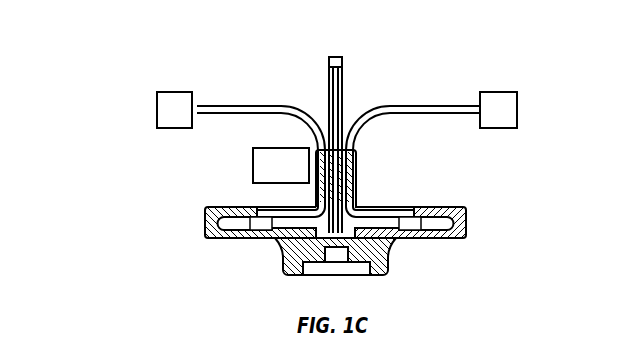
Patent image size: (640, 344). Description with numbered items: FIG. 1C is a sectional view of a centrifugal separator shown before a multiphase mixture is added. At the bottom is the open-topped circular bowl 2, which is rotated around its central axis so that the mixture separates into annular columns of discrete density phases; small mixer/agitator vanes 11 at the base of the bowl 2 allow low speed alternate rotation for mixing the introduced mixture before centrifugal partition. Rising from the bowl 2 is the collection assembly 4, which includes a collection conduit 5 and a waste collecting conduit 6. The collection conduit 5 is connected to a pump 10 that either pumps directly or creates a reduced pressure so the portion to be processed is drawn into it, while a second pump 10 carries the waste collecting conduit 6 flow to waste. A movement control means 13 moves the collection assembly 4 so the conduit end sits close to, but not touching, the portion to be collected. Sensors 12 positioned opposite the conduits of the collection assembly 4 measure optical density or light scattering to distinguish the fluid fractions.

The circular bowl 2 is at (213, 207).
The collection assembly 4 is at (360, 180).
The collection conduit 5 is at (222, 105).
The waste collecting conduit 6 is at (444, 105).
The pump 10 is at (507, 62).
The mixer/agitator vanes 11 is at (300, 237).
The sensor 12 is at (477, 253).
The movement control means 13 is at (252, 152).